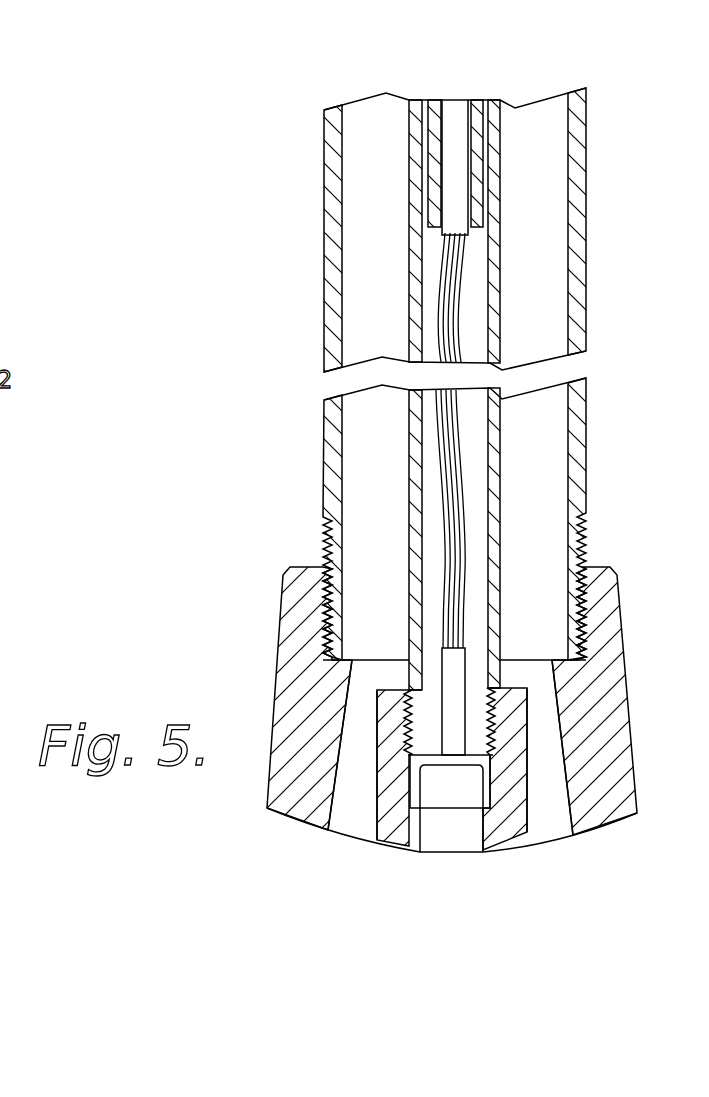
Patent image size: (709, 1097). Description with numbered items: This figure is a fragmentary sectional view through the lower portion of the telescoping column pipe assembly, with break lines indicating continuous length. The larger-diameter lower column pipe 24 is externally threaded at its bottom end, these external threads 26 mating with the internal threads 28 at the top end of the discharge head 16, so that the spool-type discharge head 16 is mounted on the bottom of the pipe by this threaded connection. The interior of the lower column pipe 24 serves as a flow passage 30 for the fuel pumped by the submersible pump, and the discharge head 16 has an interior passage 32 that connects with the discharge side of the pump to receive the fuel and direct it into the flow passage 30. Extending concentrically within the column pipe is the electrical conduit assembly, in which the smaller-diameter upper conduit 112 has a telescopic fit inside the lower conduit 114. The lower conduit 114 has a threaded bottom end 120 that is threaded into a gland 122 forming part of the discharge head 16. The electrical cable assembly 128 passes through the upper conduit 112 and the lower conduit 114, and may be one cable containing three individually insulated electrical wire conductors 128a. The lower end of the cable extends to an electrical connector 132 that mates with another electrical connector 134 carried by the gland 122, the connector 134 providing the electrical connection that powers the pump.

The discharge head 16 is at (623, 640).
The lower column pipe 24 is at (579, 331).
The external threads 26 is at (583, 542).
The internal threads 28 is at (333, 596).
The flow passage 30 is at (552, 443).
The interior passage 32 is at (350, 823).
The upper conduit 112 is at (431, 101).
The lower conduit 114 is at (496, 511).
The threaded bottom end 120 is at (492, 690).
The gland 122 is at (515, 803).
The electrical cable assembly 128 is at (455, 110).
The electrical wire conductors 128a is at (499, 253).
The electrical connector 132 is at (472, 788).
The electrical connector 134 is at (452, 845).